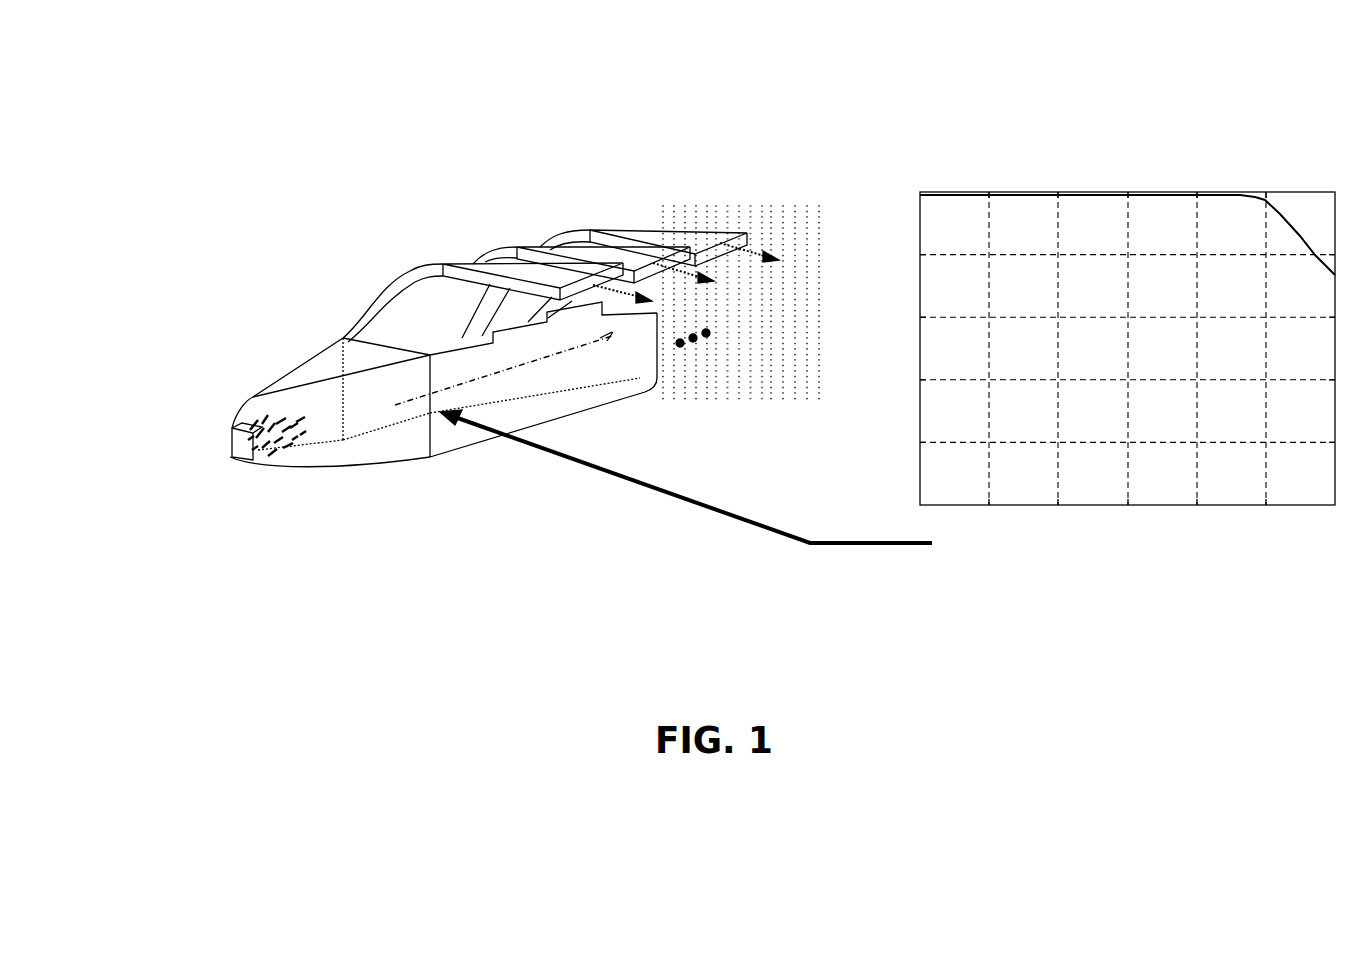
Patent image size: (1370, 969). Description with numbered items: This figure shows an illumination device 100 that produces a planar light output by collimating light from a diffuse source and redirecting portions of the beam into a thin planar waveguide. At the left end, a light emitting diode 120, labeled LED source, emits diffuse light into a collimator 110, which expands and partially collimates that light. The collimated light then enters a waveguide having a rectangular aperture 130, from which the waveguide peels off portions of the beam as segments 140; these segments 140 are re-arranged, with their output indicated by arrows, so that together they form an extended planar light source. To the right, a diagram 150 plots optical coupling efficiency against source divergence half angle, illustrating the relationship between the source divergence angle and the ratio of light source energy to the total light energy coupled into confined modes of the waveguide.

The illumination device 100 is at (371, 266).
The collimator 110 is at (303, 402).
The light emitting diode 120 is at (217, 498).
The rectangular aperture 130 is at (387, 420).
The segments 140 is at (590, 275).
The diagram 150 is at (1137, 138).